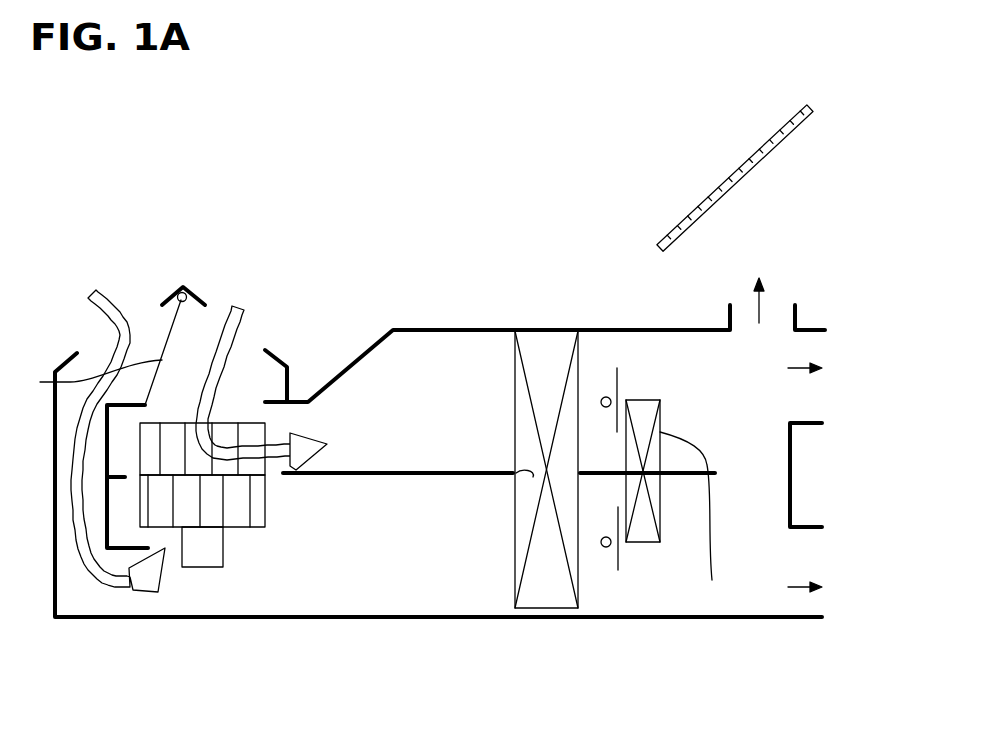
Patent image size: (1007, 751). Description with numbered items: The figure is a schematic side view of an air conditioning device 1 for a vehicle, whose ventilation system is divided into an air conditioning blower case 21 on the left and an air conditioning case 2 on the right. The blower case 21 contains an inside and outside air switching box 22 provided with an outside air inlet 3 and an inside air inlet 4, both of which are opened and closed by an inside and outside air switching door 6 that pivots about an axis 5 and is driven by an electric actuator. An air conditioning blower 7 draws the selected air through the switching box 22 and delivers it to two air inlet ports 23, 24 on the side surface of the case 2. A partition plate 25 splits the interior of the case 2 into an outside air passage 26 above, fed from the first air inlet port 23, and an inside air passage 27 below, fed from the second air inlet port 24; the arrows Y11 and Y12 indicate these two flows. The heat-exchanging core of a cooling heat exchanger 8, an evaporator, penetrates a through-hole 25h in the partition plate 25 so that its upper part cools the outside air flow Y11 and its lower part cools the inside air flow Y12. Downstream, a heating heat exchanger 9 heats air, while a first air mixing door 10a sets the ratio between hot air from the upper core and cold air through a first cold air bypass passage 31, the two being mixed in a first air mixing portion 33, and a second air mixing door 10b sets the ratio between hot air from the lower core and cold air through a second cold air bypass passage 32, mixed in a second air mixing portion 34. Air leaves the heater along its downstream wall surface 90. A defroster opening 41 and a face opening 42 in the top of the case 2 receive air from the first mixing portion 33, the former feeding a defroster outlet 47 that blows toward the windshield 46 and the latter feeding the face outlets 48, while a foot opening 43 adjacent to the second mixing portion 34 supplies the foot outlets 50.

The air conditioning device for vehicle 1 is at (599, 216).
The air conditioning case 2 is at (432, 326).
The outside air inlet 3 is at (252, 345).
The inside air inlet 4 is at (107, 343).
The axis 5 is at (182, 284).
The inside and outside air switching door 6 is at (93, 379).
The air conditioning blower 7 is at (210, 520).
The cooling heat exchanger 8 is at (547, 397).
The heating heat exchanger 9 is at (633, 413).
The first air mixing door 10a is at (605, 396).
The second air mixing door 10b is at (606, 548).
The air conditioning blower case 21 is at (53, 550).
The inside and outside air switching box 22 is at (177, 288).
The first air inlet port 23 is at (310, 430).
The second air inlet port 24 is at (323, 477).
The partition plate 25 is at (477, 476).
The through-hole 25h is at (533, 477).
The outside air passage 26 is at (425, 418).
The inside air passage 27 is at (445, 538).
The first cold air bypass passage 31 is at (655, 367).
The second cold air bypass passage 32 is at (645, 573).
The first air mixing portion 33 is at (688, 412).
The second air mixing portion 34 is at (683, 545).
The defroster opening 41 is at (775, 315).
The face opening 42 is at (800, 410).
The foot opening 43 is at (790, 553).
The windshield 46 is at (745, 162).
The defroster outlet 47 is at (763, 284).
The face outlets 48 is at (831, 370).
The foot outlets 50 is at (831, 585).
The downstream wall surface 90 is at (712, 580).
The arrow Y11 is at (222, 308).
The arrow Y12 is at (108, 308).